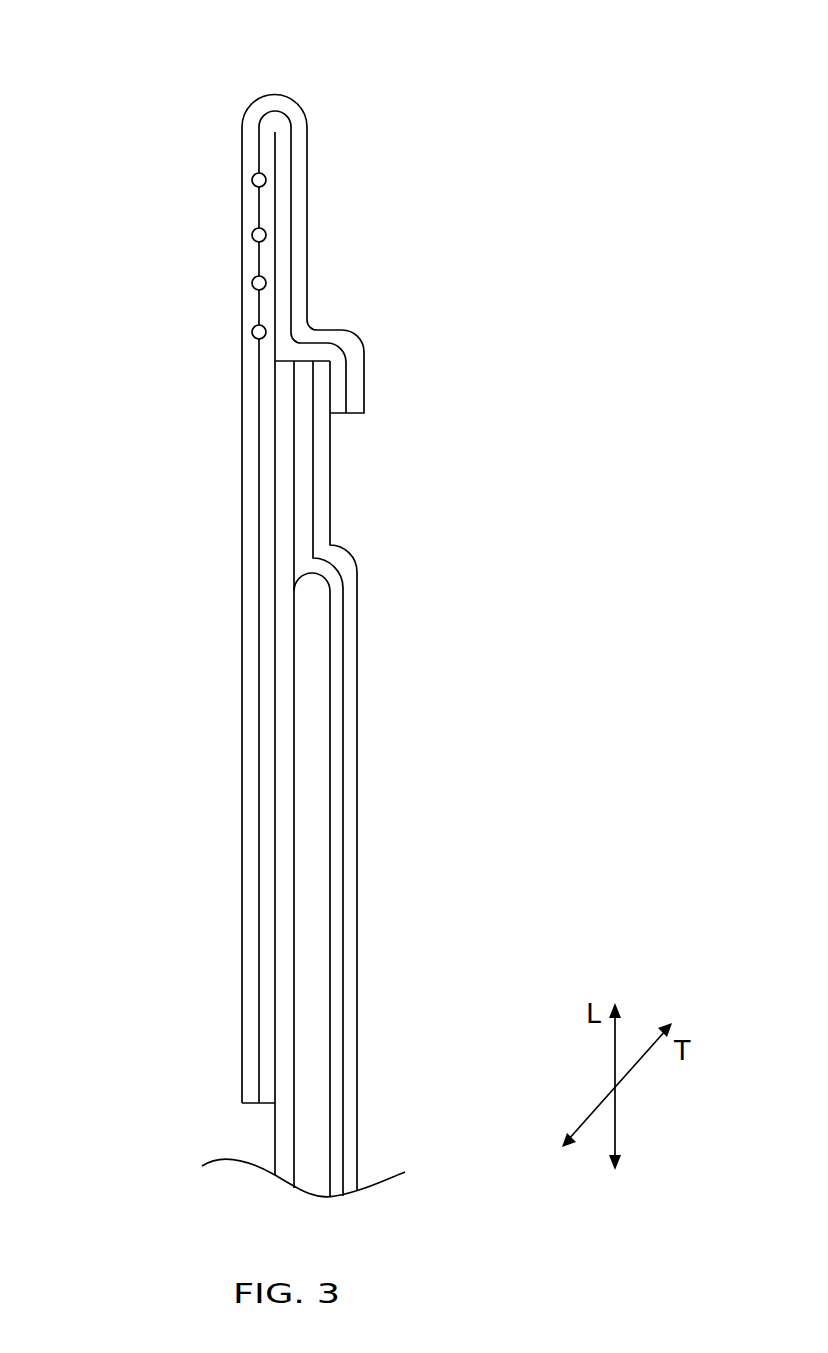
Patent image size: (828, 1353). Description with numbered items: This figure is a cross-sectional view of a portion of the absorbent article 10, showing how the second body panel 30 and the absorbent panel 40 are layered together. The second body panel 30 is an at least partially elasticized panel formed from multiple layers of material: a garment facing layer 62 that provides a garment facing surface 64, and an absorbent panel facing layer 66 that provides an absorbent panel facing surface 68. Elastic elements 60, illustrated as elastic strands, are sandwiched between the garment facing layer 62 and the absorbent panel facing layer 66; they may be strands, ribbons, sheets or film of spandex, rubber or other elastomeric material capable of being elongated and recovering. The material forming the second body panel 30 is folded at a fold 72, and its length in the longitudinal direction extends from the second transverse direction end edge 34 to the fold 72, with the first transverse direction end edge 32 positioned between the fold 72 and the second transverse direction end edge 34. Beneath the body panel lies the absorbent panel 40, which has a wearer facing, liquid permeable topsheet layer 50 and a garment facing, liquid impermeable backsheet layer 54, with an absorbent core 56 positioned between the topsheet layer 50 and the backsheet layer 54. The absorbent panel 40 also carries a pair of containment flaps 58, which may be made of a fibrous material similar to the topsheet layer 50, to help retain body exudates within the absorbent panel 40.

The absorbent article 10 is at (133, 93).
The second body panel 30 is at (341, 196).
The first transverse direction end edge 32 is at (345, 413).
The second transverse direction end edge 34 is at (253, 1103).
The absorbent panel 40 is at (428, 817).
The topsheet layer 50 is at (337, 647).
The backsheet layer 54 is at (283, 1147).
The absorbent core 56 is at (310, 917).
The containment flaps 58 is at (350, 993).
The elastic elements 60 is at (257, 175).
The garment facing layer 62 is at (252, 688).
The garment facing surface 64 is at (243, 612).
The absorbent panel facing layer 66 is at (268, 480).
The absorbent panel facing surface 68 is at (275, 535).
The fold 72 is at (273, 95).